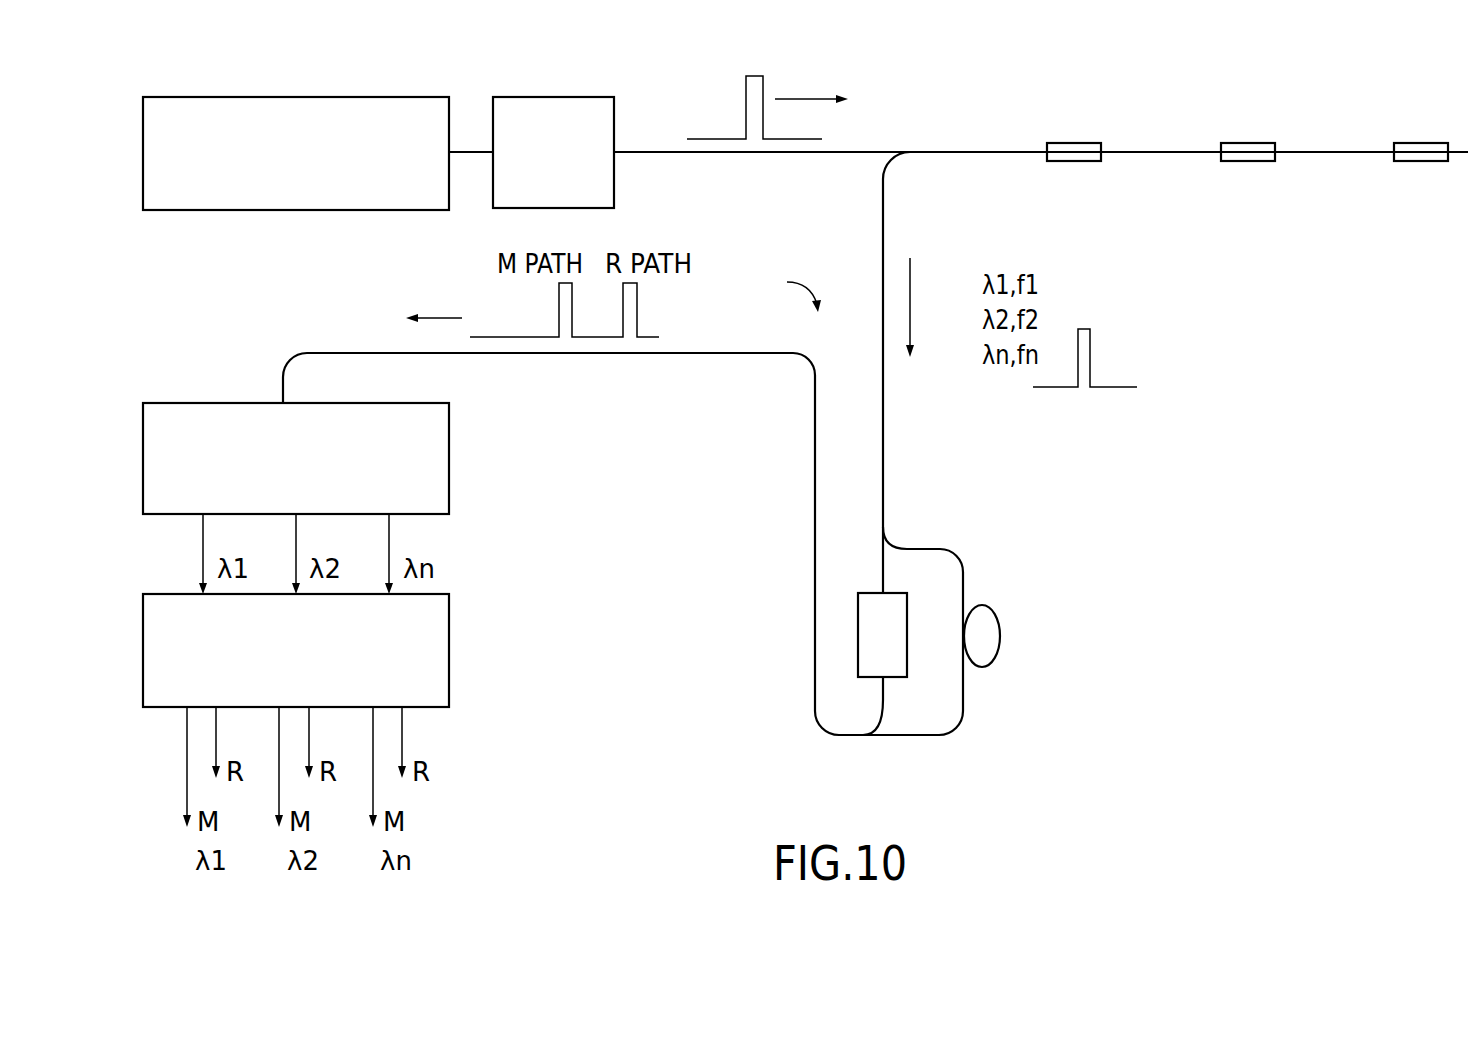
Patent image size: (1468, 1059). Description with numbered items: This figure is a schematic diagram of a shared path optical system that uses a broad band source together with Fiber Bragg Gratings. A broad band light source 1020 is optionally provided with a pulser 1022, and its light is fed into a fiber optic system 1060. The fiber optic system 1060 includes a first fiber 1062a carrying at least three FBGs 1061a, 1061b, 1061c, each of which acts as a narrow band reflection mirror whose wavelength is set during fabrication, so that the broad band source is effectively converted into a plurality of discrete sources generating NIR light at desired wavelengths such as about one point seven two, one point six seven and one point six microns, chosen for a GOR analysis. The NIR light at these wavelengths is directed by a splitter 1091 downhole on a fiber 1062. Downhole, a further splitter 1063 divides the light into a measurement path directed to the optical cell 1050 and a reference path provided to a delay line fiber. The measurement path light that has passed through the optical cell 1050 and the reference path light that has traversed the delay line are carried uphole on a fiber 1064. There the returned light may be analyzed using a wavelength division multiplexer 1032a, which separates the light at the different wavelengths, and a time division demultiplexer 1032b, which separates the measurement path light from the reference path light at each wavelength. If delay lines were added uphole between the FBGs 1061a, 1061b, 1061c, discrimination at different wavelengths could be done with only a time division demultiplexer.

The broad band light source 1020 is at (365, 97).
The pulser 1022 is at (582, 96).
The splitter 1091 is at (883, 138).
The first fiber 1062a is at (978, 150).
The Fiber Bragg Grating 1061a is at (1067, 162).
The Fiber Bragg Grating 1061b is at (1241, 162).
The Fiber Bragg Grating 1061c is at (1415, 162).
The fiber optic system 1060 is at (775, 290).
The fiber 1062 is at (923, 353).
The fiber 1064 is at (815, 508).
The splitter 1063 is at (883, 520).
The optical cell 1050 is at (858, 648).
The wavelength division multiplexer 1032a is at (449, 438).
The time division demultiplexer 1032b is at (449, 620).